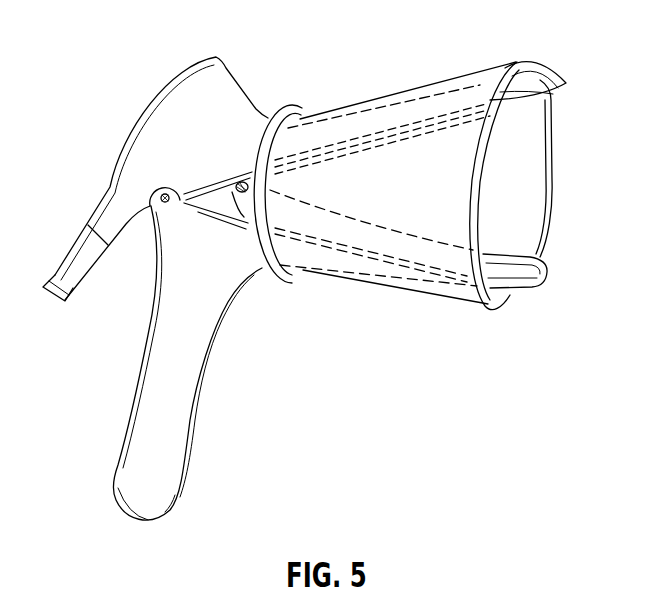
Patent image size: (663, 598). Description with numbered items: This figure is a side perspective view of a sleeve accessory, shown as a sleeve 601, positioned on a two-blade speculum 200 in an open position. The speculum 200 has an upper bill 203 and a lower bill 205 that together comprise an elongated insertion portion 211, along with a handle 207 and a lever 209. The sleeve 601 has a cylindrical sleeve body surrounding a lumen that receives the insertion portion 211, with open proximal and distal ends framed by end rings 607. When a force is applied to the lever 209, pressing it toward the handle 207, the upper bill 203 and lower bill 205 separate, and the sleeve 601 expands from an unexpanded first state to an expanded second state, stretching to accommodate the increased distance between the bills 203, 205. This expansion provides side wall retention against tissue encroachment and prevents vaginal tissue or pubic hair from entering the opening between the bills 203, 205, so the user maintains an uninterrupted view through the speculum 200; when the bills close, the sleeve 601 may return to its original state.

The speculum 200 is at (270, 49).
The insertion portion 211 is at (413, 83).
The upper bill 203 is at (483, 83).
The end rings 607 is at (555, 185).
The lever 209 is at (105, 227).
The sleeve 601 is at (338, 276).
The lower bill 205 is at (435, 279).
The handle 207 is at (135, 404).